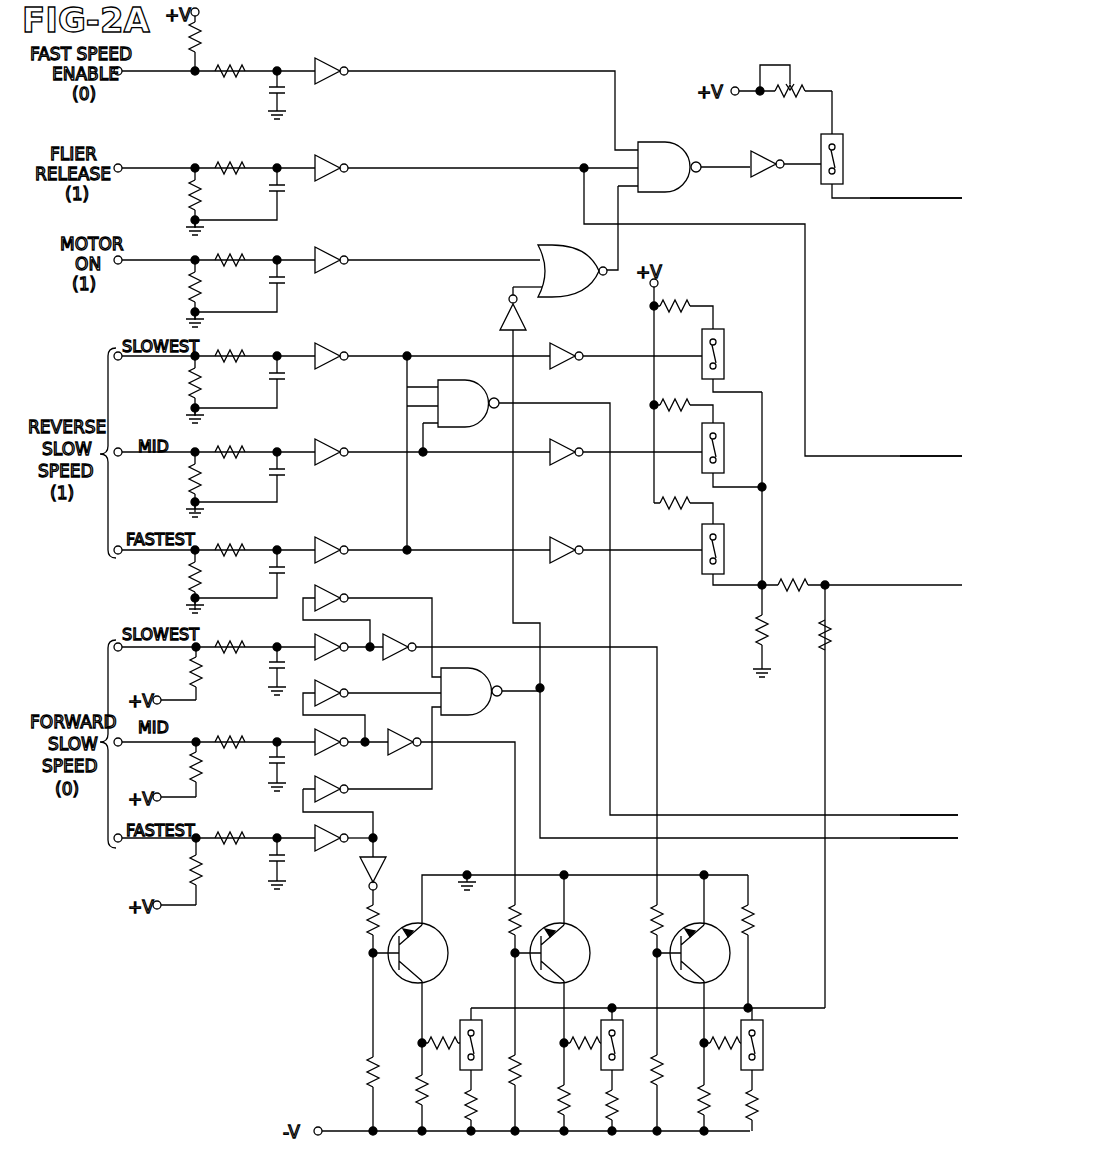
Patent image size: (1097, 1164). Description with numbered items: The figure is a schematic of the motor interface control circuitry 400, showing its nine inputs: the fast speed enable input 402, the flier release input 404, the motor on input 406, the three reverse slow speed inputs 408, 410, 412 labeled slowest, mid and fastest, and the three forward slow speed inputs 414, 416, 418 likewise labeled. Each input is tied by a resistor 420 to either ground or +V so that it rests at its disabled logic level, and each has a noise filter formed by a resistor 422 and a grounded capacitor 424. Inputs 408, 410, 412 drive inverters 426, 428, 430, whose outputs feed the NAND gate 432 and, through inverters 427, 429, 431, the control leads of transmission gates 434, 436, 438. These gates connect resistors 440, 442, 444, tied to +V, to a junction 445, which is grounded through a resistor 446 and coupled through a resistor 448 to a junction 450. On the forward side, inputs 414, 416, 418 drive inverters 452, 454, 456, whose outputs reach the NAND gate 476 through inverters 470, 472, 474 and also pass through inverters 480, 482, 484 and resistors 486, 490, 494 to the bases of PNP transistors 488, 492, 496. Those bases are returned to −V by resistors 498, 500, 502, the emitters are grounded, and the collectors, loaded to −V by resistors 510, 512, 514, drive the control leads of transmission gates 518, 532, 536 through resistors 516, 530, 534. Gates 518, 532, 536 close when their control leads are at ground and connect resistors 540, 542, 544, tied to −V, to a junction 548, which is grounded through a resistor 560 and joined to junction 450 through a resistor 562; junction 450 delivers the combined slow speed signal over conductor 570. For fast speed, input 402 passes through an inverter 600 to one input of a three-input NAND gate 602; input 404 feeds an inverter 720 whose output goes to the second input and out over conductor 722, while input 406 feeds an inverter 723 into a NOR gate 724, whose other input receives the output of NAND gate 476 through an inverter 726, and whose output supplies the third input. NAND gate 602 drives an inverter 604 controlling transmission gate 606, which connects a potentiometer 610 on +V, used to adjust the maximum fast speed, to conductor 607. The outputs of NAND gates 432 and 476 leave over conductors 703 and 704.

The motor interface control circuitry 400 is at (470, 52).
The fast speed enable input 402 is at (122, 75).
The flier release input 404 is at (122, 164).
The motor on input 406 is at (122, 256).
The reverse slow speed input 408 is at (122, 366).
The reverse slow speed input 410 is at (122, 446).
The reverse slow speed input 412 is at (122, 544).
The forward slow speed input 414 is at (122, 636).
The forward slow speed input 416 is at (122, 748).
The forward slow speed input 418 is at (122, 842).
The resistor 420 is at (205, 36).
The resistor 422 is at (226, 64).
The grounded capacitor 424 is at (286, 90).
The inverter 426 is at (330, 344).
The inverter 427 is at (568, 348).
The inverter 428 is at (330, 440).
The inverter 429 is at (562, 466).
The inverter 430 is at (330, 538).
The inverter 431 is at (562, 564).
The NAND gate 432 is at (448, 428).
The transmission gate 434 is at (730, 352).
The transmission gate 436 is at (700, 444).
The transmission gate 438 is at (700, 540).
The resistor 440 is at (680, 298).
The resistor 442 is at (694, 380).
The resistor 444 is at (694, 480).
The junction 445 is at (758, 592).
The resistor 446 is at (752, 636).
The resistor 448 is at (792, 578).
The junction 450 is at (822, 578).
The inverter 452 is at (312, 640).
The inverter 454 is at (312, 736).
The inverter 456 is at (312, 832).
The inverter 470 is at (336, 590).
The inverter 472 is at (330, 684).
The inverter 474 is at (332, 784).
The NAND gate 476 is at (472, 716).
The inverter 480 is at (386, 632).
The inverter 482 is at (410, 736).
The inverter 484 is at (388, 870).
The resistor 486 is at (650, 930).
The PNP transistor 488 is at (716, 926).
The resistor 490 is at (508, 930).
The PNP transistor 492 is at (582, 924).
The resistor 494 is at (364, 924).
The PNP transistor 496 is at (446, 956).
The resistor 498 is at (660, 1062).
The resistor 500 is at (550, 1068).
The resistor 502 is at (366, 1070).
The resistor 510 is at (704, 1100).
The resistor 512 is at (552, 1070).
The resistor 514 is at (412, 1088).
The resistor 516 is at (724, 1054).
The transmission gate 518 is at (766, 1040).
The resistor 530 is at (600, 1042).
The transmission gate 532 is at (560, 1086).
The resistor 534 is at (446, 1036).
The transmission gate 536 is at (430, 1072).
The resistor 540 is at (760, 1096).
The resistor 542 is at (605, 1092).
The resistor 544 is at (484, 1092).
The junction 548 is at (752, 1008).
The resistor 560 is at (756, 918).
The resistor 562 is at (832, 636).
The conductor 570 is at (936, 585).
The inverter 600 is at (326, 60).
The NAND gate 602 is at (670, 142).
The inverter 604 is at (778, 136).
The transmission gate 606 is at (843, 142).
The conductor 607 is at (910, 198).
The potentiometer 610 is at (798, 72).
The conductor 703 is at (934, 815).
The conductor 704 is at (936, 838).
The inverter 720 is at (326, 156).
The conductor 722 is at (920, 456).
The inverter 723 is at (326, 248).
The NOR gate 724 is at (556, 246).
The inverter 726 is at (500, 318).